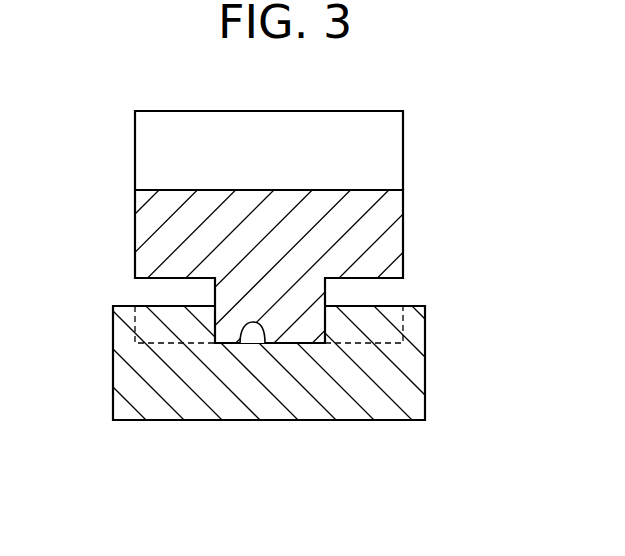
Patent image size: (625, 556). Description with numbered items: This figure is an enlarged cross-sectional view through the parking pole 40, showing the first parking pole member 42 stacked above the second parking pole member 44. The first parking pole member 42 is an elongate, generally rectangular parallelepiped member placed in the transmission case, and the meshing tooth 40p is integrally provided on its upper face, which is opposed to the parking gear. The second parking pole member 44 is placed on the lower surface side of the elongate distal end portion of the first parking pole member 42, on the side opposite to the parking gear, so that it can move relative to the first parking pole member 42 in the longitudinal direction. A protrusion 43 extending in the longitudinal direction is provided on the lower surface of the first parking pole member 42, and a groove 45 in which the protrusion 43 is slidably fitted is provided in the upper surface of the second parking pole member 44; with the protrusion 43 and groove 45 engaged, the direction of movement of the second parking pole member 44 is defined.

The parking pole 40 is at (446, 114).
The meshing tooth 40p is at (253, 127).
The first parking pole member 42 is at (150, 236).
The protrusion 43 is at (296, 315).
The second parking pole member 44 is at (140, 372).
The groove 45 is at (255, 323).